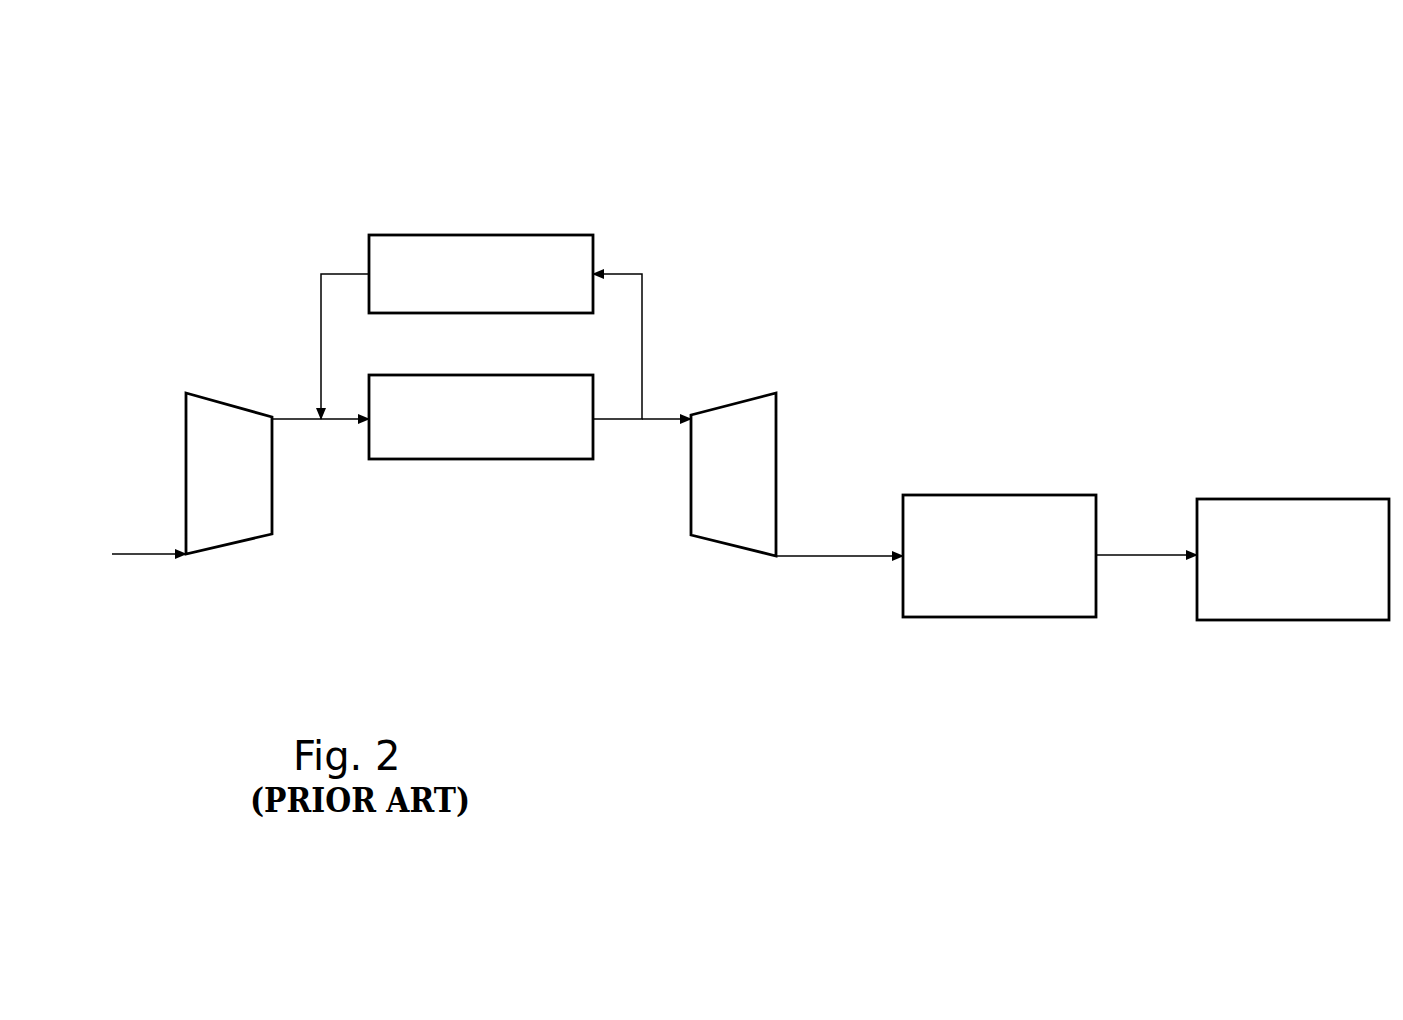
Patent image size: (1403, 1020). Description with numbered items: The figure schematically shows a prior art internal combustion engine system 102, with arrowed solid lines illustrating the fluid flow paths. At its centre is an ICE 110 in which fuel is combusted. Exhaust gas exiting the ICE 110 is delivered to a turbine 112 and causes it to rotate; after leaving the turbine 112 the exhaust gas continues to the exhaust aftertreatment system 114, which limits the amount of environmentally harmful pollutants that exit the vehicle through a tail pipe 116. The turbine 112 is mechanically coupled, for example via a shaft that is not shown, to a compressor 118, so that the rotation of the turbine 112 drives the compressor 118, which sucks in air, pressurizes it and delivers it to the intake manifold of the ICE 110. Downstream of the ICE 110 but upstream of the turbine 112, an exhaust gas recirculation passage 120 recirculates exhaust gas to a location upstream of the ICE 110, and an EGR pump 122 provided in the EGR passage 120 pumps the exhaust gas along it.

The prior art internal combustion engine system 102 is at (276, 134).
The ICE 110 is at (453, 437).
The turbine 112 is at (725, 527).
The exhaust aftertreatment system 114 is at (1027, 558).
The tail pipe 116 is at (1264, 567).
The compressor 118 is at (225, 487).
The exhaust gas recirculation passage 120 is at (643, 328).
The EGR pump 122 is at (508, 260).